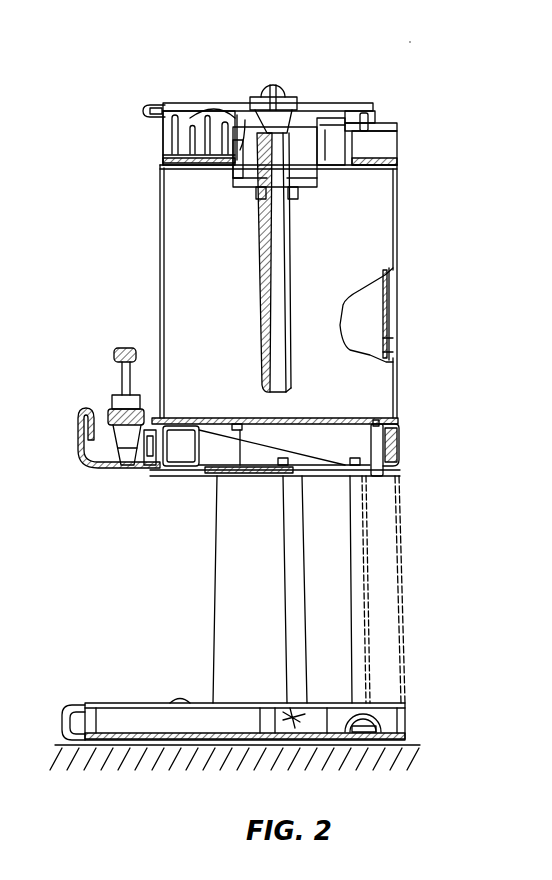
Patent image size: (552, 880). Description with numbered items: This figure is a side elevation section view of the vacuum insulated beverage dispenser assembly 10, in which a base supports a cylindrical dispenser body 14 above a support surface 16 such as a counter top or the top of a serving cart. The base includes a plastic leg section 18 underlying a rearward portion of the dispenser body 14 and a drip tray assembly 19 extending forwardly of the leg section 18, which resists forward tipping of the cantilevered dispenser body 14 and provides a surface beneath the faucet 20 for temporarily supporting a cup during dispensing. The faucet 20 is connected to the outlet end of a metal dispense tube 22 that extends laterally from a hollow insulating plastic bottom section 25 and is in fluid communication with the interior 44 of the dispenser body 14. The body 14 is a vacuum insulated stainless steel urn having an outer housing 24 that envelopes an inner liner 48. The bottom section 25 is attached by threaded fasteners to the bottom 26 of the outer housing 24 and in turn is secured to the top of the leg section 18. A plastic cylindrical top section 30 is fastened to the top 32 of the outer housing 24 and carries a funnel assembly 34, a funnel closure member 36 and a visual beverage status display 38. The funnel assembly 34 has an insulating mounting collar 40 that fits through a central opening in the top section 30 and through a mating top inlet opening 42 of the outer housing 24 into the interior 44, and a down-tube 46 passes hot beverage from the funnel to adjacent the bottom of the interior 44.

The vacuum insulated beverage dispenser assembly 10 is at (412, 38).
The dispenser body 14 is at (157, 262).
The support surface 16 is at (410, 742).
The plastic leg section 18 is at (384, 572).
The drip tray assembly 19 is at (114, 702).
The faucet 20 is at (112, 410).
The dispense tube 22 is at (148, 472).
The outer housing 24 is at (383, 263).
The bottom section 25 is at (392, 462).
The bottom of the outer housing 26 is at (368, 426).
The top section 30 is at (392, 130).
The top of the outer housing 32 is at (378, 160).
The funnel assembly 34 is at (298, 130).
The funnel closure member 36 is at (271, 96).
The visual beverage status display 38 is at (162, 152).
The insulating mounting collar 40 is at (332, 140).
The top inlet opening 42 is at (296, 188).
The interior 44 is at (372, 320).
The down-tube 46 is at (285, 276).
The inner liner 48 is at (388, 358).